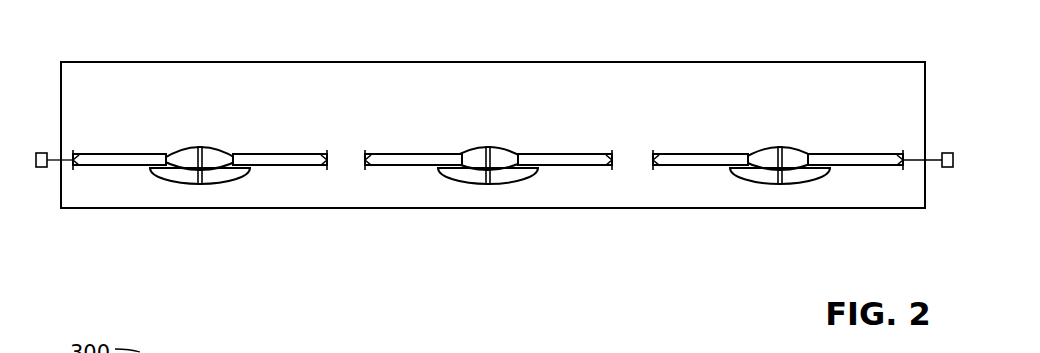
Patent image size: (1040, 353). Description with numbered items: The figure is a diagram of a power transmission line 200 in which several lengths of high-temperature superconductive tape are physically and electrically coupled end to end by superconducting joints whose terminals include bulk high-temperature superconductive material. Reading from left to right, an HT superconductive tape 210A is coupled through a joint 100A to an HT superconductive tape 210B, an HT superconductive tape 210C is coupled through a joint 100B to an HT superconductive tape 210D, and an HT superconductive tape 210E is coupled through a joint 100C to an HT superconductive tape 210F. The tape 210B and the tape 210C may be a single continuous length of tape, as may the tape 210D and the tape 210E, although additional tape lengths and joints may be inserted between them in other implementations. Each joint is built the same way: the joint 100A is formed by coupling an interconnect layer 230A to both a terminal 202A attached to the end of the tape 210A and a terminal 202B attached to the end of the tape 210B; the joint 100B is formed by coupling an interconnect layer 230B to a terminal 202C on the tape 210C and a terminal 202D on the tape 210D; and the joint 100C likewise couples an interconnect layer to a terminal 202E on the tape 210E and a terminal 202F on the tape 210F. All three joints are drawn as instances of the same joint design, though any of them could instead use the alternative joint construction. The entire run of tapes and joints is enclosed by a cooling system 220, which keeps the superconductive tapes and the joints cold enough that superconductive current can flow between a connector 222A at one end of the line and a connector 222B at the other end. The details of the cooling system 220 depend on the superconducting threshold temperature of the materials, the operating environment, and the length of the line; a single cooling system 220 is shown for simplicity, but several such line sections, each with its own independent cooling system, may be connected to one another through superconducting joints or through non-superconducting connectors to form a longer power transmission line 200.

The power transmission line 200 is at (268, 35).
The cooling system 220 is at (493, 135).
The connector 222A is at (41, 153).
The connector 222B is at (947, 153).
The joint 100A is at (214, 191).
The joint 100B is at (495, 169).
The joint 100C is at (779, 165).
The HT superconductive tape 210A is at (144, 166).
The HT superconductive tape 210B is at (284, 154).
The HT superconductive tape 210C is at (418, 166).
The HT superconductive tape 210D is at (566, 154).
The HT superconductive tape 210E is at (709, 166).
The HT superconductive tape 210F is at (844, 154).
The terminal 202A is at (186, 184).
The terminal 202B is at (222, 184).
The terminal 202C is at (473, 185).
The terminal 202D is at (507, 185).
The terminal 202E is at (764, 185).
The terminal 202F is at (799, 185).
The interconnect layer 230A is at (199, 184).
The interconnect layer 230B is at (486, 185).